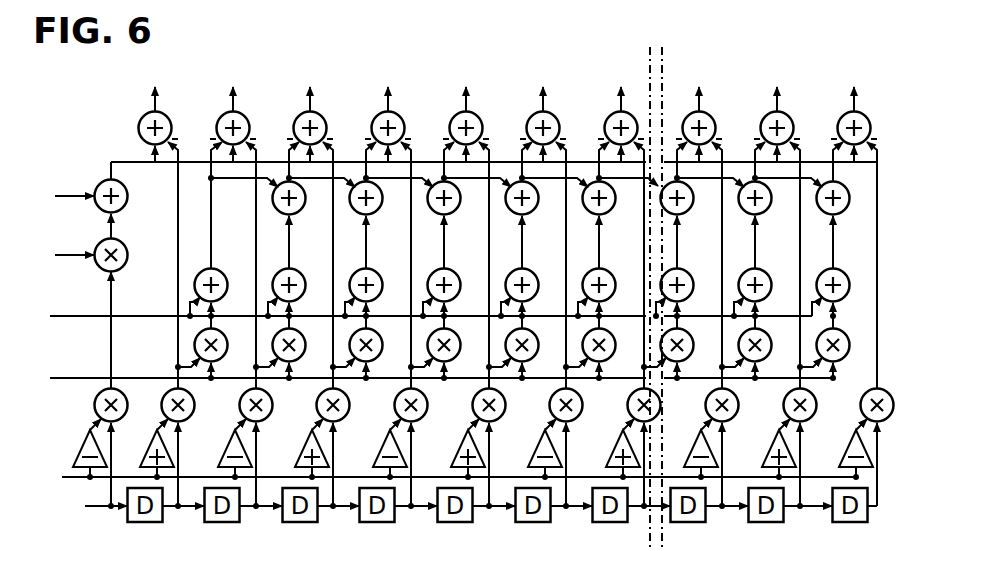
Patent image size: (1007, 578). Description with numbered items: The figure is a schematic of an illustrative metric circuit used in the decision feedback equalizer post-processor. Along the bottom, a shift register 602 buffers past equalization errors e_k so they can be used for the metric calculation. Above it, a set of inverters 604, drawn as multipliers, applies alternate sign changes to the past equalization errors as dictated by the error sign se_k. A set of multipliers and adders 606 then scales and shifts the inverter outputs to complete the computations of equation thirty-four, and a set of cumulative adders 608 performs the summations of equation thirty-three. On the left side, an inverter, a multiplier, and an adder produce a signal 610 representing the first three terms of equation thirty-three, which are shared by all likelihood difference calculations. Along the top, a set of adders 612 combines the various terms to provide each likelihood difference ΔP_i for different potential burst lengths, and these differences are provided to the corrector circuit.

The shift register 602 is at (897, 477).
The set of inverters 604 is at (897, 390).
The set of multipliers and adders 606 is at (897, 250).
The set of cumulative adders 608 is at (897, 175).
The signal 610 is at (135, 162).
The set of adders 612 is at (897, 105).